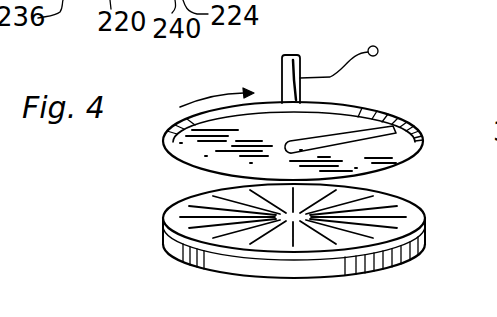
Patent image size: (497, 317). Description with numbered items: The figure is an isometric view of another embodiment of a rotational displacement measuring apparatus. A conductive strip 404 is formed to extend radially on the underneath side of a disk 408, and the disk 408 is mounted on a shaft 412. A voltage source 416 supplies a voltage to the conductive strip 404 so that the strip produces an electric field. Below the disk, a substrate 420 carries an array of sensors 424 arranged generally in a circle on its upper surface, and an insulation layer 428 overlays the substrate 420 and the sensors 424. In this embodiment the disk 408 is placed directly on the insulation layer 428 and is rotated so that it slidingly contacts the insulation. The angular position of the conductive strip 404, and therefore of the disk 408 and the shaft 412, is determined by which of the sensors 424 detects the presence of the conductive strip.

The conductive strip 404 is at (362, 133).
The disk 408 is at (163, 141).
The shaft 412 is at (300, 56).
The voltage source 416 is at (373, 46).
The substrate 420 is at (176, 256).
The sensors 424 is at (313, 240).
The insulation layer 428 is at (163, 233).